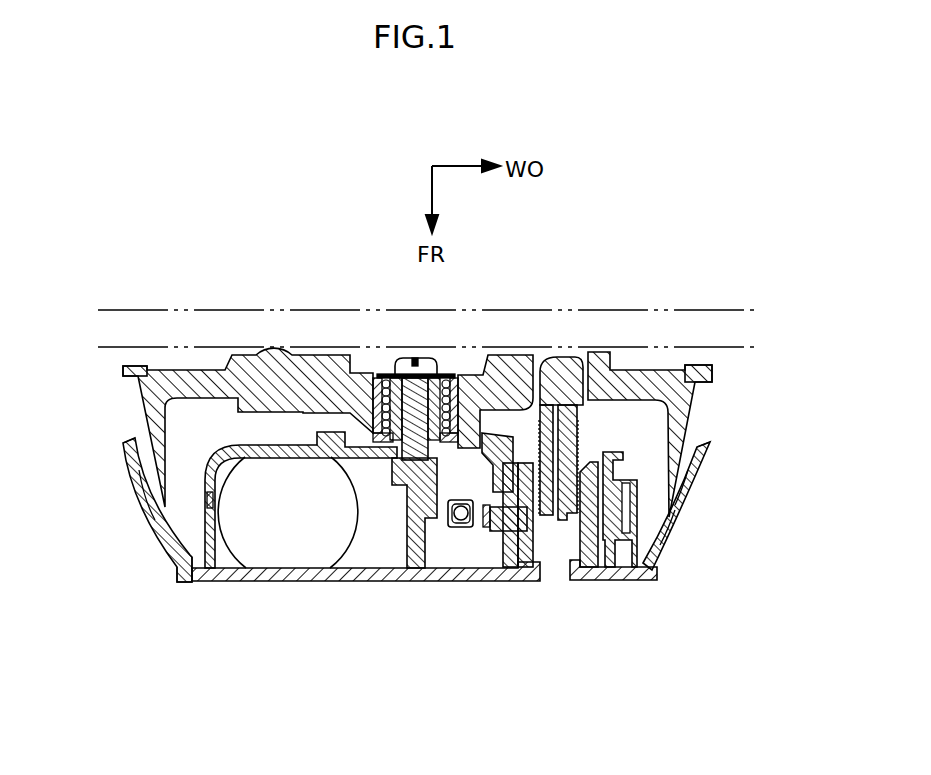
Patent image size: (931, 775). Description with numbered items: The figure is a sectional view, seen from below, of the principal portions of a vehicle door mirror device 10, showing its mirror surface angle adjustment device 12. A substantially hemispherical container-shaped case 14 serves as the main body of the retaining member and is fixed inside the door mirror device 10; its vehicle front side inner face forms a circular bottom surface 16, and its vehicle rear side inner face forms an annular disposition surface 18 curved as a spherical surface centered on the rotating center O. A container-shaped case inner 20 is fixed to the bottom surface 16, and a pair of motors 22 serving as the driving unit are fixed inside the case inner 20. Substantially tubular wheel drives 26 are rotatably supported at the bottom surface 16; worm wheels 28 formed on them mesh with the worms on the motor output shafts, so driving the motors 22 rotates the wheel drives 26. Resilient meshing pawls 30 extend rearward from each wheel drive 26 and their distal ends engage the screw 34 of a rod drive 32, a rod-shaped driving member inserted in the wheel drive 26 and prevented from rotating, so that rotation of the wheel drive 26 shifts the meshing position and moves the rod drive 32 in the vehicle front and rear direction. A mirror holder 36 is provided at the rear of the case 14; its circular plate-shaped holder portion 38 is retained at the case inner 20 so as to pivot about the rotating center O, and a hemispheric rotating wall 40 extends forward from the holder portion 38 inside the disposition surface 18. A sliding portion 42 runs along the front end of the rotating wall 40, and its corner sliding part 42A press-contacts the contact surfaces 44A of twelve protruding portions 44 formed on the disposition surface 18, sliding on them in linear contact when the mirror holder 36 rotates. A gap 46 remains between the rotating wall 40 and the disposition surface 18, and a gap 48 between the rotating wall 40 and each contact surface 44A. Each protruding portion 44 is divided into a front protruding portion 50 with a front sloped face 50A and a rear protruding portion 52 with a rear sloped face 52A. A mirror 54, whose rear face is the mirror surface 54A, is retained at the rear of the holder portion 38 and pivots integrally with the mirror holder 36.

The vehicle door mirror device 10 is at (423, 414).
The mirror surface angle adjustment device 12 is at (207, 245).
The case 14 is at (465, 599).
The bottom surface 16 is at (443, 574).
The disposition surface 18 is at (657, 540).
The case inner 20 is at (281, 488).
The motors 22 is at (289, 471).
The wheel drives 26 is at (502, 542).
The worm wheels 28 is at (615, 545).
The meshing pawls 30 is at (519, 468).
The rod drive 32 is at (597, 405).
The screw 34 is at (577, 440).
The mirror holder 36 is at (121, 372).
The holder portion 38 is at (715, 378).
The rotating wall 40 is at (143, 398).
The sliding portion 42 is at (165, 503).
The sliding part 42A is at (672, 500).
The protruding portions 44 is at (423, 502).
The contact surface 44A is at (183, 556).
The gap 46 is at (136, 443).
The gap 48 is at (688, 437).
The front protruding portion 50 is at (167, 538).
The front sloped face 50A is at (148, 494).
The rear protruding portion 52 is at (686, 489).
The rear sloped face 52A is at (670, 516).
The mirror 54 is at (163, 310).
The mirror surface 54A is at (611, 310).
The rotating center O is at (421, 364).